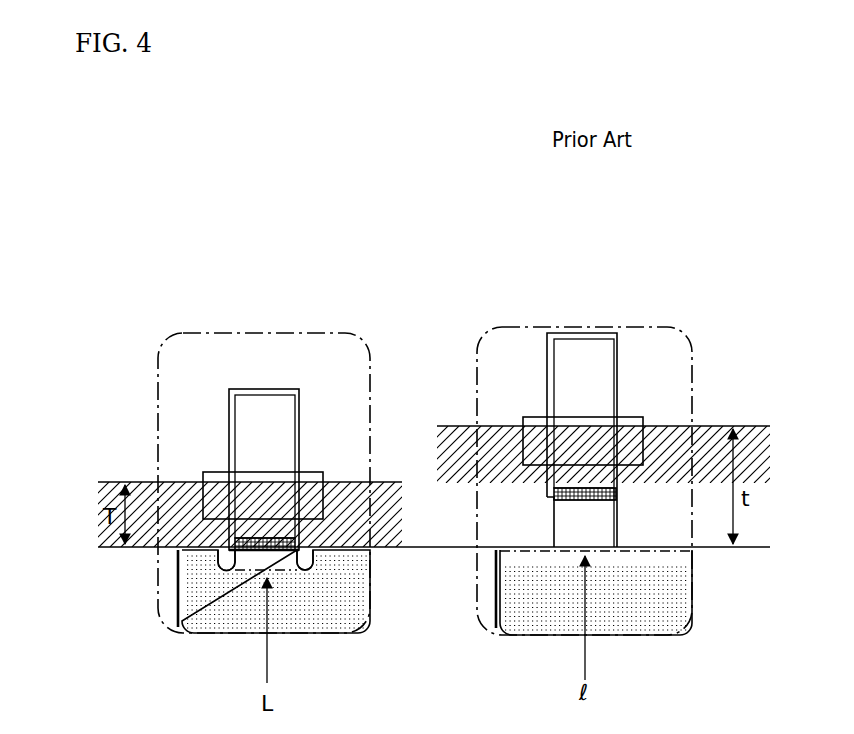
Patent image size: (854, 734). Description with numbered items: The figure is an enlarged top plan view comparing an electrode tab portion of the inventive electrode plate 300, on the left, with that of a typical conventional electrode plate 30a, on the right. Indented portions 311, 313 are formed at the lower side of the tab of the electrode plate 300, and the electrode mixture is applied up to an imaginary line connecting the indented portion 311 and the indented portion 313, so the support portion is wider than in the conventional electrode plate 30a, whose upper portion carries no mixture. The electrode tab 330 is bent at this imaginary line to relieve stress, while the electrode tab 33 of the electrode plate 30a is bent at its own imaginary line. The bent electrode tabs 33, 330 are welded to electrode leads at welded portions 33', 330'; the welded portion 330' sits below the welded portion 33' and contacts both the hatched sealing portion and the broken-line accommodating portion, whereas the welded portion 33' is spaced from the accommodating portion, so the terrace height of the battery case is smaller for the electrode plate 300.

The electrode plate 300 is at (289, 255).
The electrode tab 330 is at (306, 487).
The welded portion 330' is at (321, 432).
The indented portion 311 is at (226, 571).
The indented portion 313 is at (310, 571).
The electrode plate 30a is at (611, 255).
The electrode tab 33 is at (622, 497).
The welded portion 33' is at (623, 390).